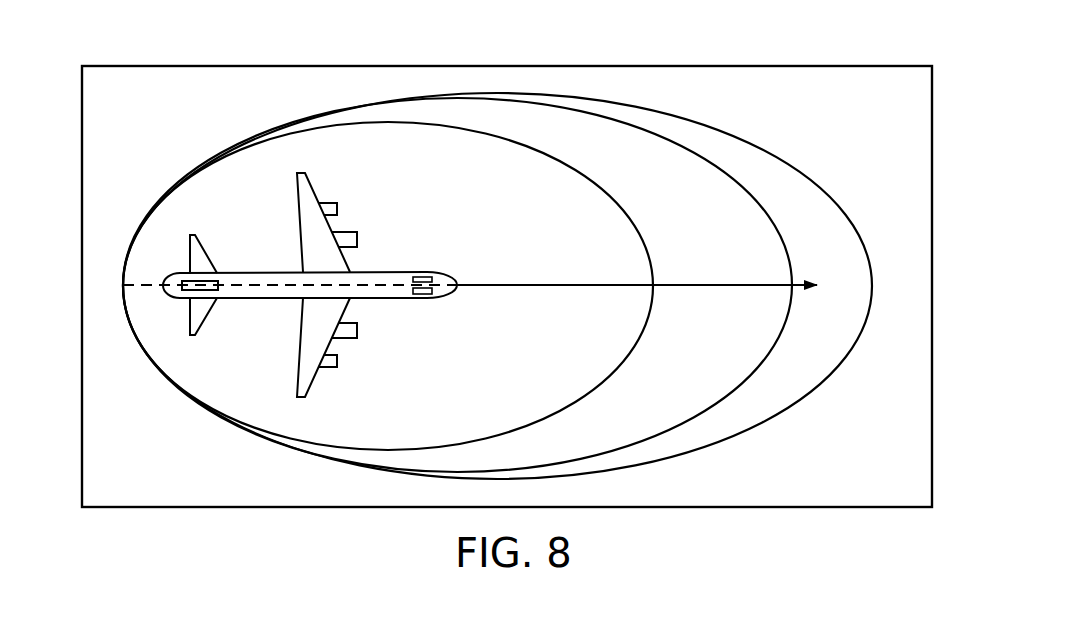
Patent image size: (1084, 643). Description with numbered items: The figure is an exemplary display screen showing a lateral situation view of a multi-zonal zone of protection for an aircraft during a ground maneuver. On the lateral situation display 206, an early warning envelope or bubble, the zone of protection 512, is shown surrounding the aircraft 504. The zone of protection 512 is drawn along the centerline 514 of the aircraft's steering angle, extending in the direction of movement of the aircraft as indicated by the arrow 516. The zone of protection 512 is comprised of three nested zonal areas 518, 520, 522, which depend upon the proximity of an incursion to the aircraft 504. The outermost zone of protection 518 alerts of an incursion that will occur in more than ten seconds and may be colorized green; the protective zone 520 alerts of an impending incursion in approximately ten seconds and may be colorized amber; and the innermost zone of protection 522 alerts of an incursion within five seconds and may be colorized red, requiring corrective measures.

The lateral situation display 206 is at (908, 66).
The zone of protection 512 is at (184, 159).
The aircraft 504 is at (313, 195).
The centerline 514 is at (400, 293).
The arrow 516 is at (707, 285).
The zone of protection 518 is at (790, 407).
The protective zone 520 is at (783, 325).
The zone of protection 522 is at (635, 352).